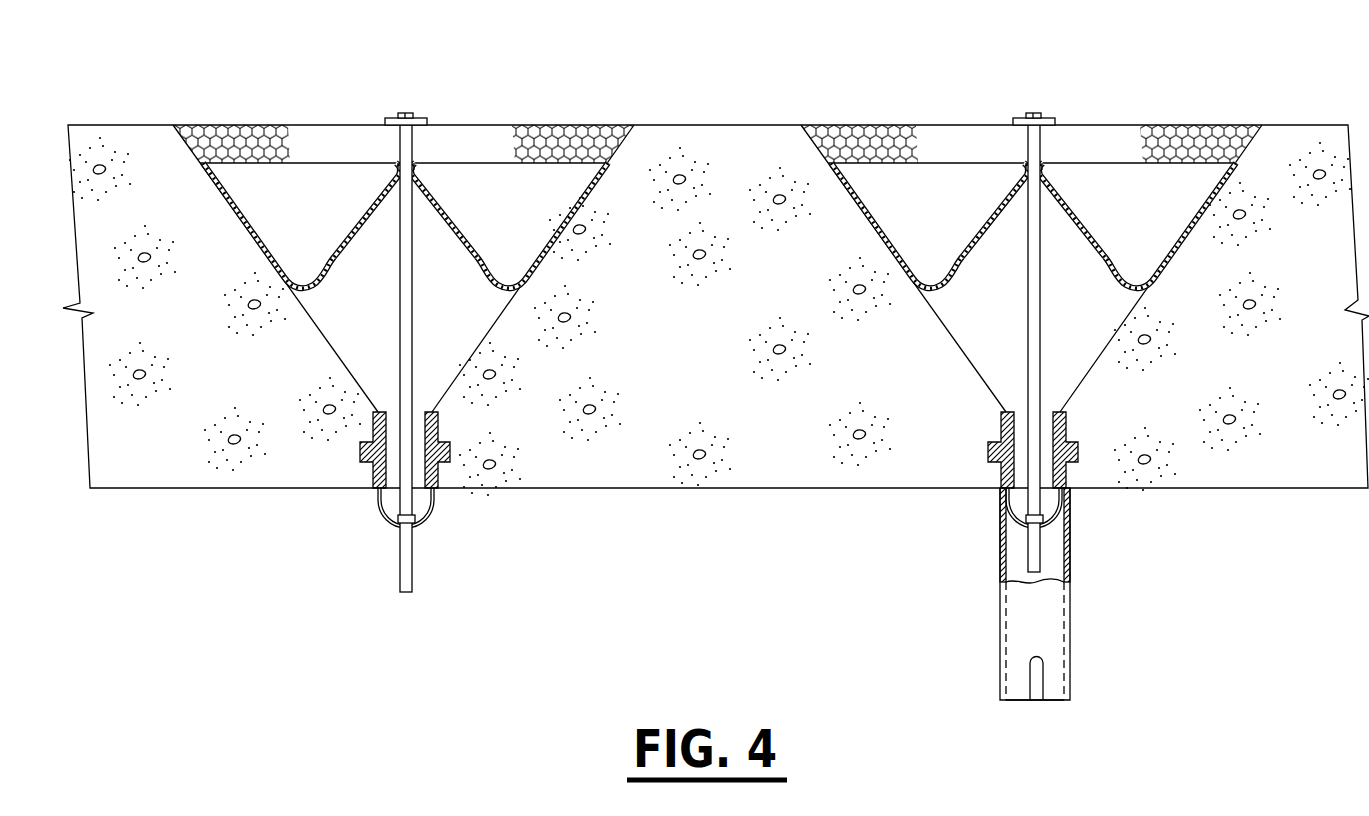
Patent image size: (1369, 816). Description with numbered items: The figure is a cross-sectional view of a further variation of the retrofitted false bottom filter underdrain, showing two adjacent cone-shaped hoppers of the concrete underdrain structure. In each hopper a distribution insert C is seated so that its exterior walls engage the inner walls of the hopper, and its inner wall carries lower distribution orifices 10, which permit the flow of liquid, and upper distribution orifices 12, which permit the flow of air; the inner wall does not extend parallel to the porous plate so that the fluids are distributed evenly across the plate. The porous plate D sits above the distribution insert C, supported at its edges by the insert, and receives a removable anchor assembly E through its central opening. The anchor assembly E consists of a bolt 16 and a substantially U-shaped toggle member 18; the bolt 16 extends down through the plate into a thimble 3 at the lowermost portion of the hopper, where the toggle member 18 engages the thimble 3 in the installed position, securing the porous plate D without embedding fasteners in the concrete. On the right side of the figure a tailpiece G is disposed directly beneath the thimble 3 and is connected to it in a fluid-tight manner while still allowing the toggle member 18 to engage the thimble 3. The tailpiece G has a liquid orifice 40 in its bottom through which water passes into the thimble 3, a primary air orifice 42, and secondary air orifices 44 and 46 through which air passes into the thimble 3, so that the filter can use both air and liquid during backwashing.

The thimble 3 is at (370, 477).
The lower distribution orifices 10 is at (333, 252).
The upper distribution orifices 12 is at (356, 203).
The bolt 16 is at (413, 300).
The toggle member 18 is at (427, 518).
The liquid orifice 40 is at (1060, 703).
The primary air orifice 42 is at (1045, 666).
The secondary air orifice 44 is at (1084, 556).
The secondary air orifice 46 is at (986, 556).
The distribution insert C is at (440, 182).
The porous plate D is at (545, 110).
The removable anchor assembly E is at (396, 103).
The tailpiece G is at (1035, 624).